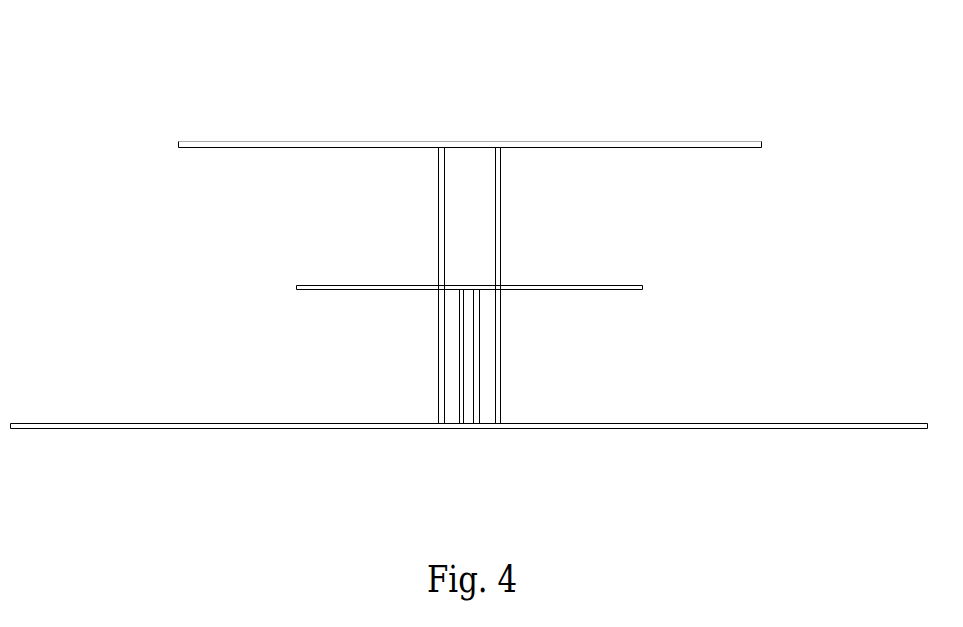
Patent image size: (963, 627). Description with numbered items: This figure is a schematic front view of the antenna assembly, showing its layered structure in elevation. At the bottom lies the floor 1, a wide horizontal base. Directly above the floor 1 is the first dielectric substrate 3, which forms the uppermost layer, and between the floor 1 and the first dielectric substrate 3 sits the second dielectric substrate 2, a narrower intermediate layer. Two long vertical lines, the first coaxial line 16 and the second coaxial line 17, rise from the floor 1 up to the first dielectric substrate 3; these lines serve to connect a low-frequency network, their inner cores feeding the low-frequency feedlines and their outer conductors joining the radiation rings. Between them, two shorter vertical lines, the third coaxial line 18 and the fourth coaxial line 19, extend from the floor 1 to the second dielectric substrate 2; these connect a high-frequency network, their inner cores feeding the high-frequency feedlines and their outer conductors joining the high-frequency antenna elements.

The floor 1 is at (469, 364).
The second dielectric substrate 2 is at (413, 238).
The first dielectric substrate 3 is at (470, 84).
The first coaxial line 16 is at (386, 222).
The second coaxial line 17 is at (541, 222).
The third coaxial line 18 is at (424, 404).
The fourth coaxial line 19 is at (510, 404).